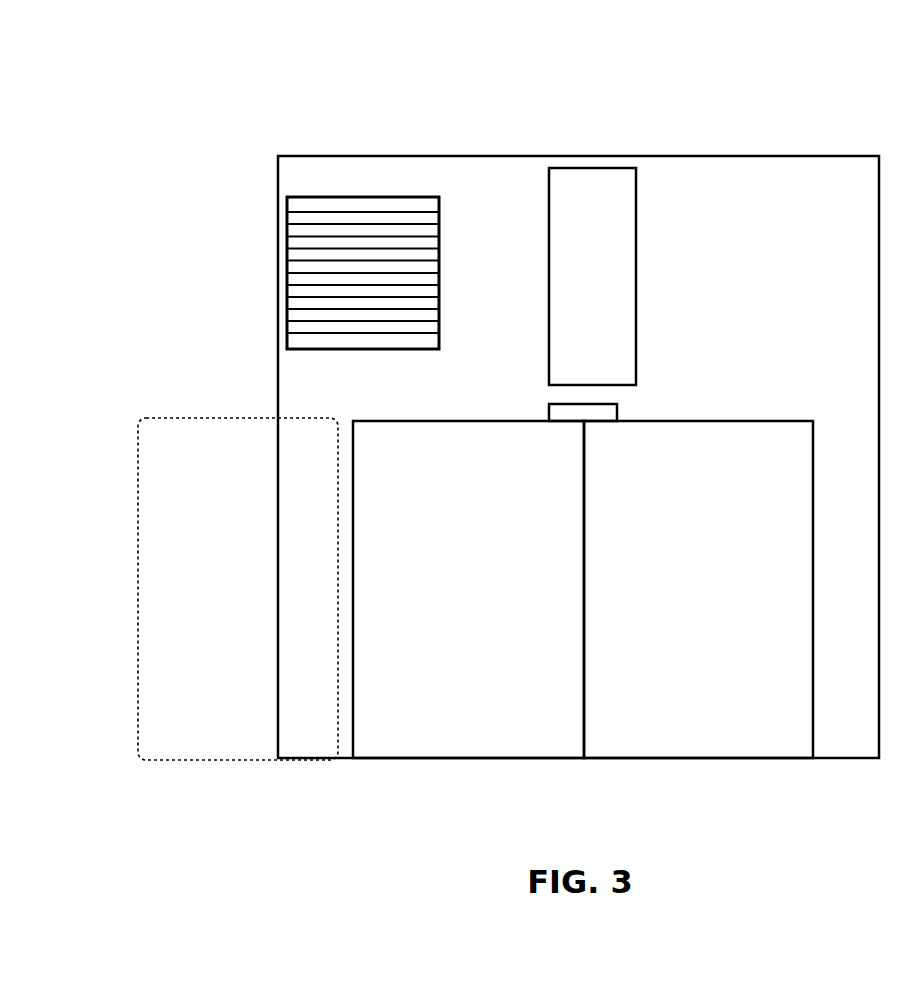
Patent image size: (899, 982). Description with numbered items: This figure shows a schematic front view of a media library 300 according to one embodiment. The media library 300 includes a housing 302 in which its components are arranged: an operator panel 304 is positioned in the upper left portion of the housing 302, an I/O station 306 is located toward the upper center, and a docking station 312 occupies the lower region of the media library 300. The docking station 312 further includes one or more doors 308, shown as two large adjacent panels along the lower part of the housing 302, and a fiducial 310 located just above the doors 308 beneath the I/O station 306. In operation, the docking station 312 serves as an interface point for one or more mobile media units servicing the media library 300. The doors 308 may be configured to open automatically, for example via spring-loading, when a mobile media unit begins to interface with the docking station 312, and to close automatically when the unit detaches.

The media library 300 is at (180, 76).
The housing 302 is at (830, 168).
The operator panel 304 is at (407, 212).
The I/O station 306 is at (604, 178).
The doors 308 is at (479, 594).
The fiducial 310 is at (557, 409).
The docking station 312 is at (138, 597).